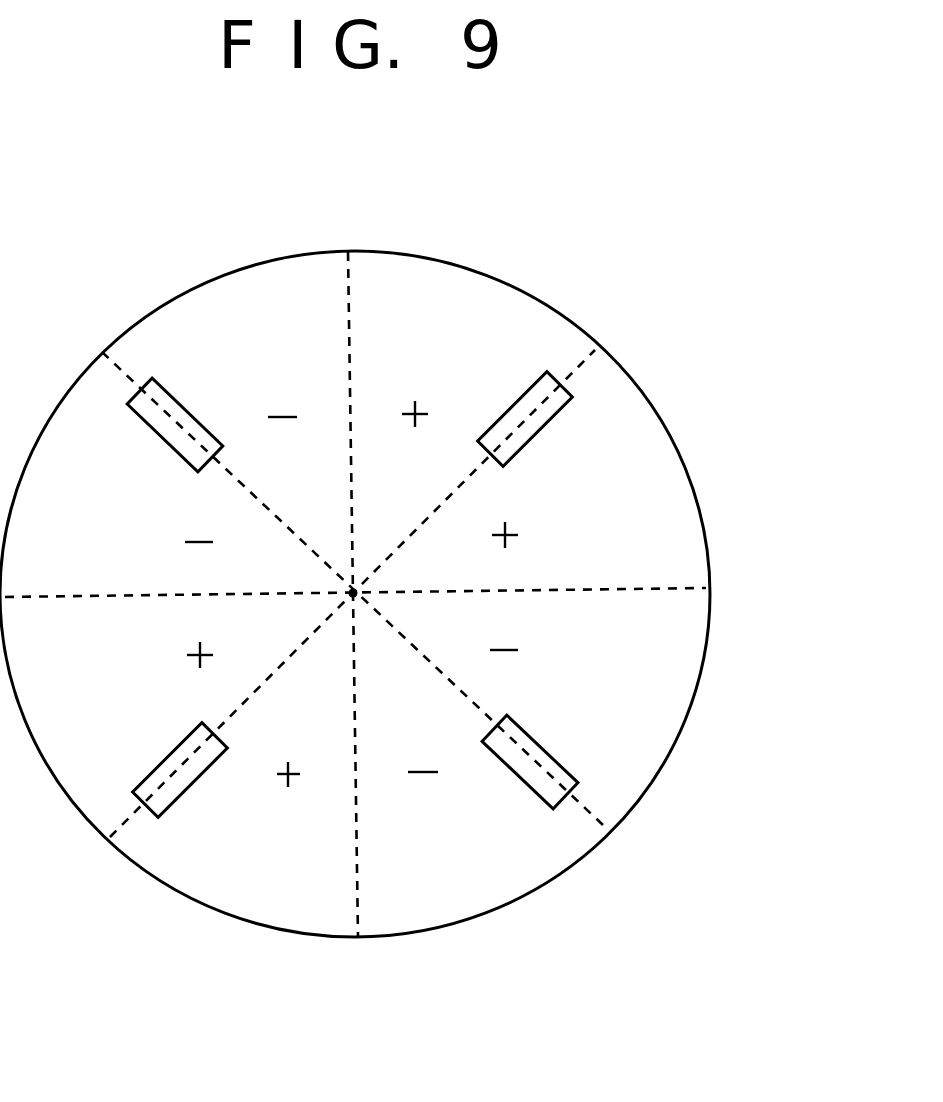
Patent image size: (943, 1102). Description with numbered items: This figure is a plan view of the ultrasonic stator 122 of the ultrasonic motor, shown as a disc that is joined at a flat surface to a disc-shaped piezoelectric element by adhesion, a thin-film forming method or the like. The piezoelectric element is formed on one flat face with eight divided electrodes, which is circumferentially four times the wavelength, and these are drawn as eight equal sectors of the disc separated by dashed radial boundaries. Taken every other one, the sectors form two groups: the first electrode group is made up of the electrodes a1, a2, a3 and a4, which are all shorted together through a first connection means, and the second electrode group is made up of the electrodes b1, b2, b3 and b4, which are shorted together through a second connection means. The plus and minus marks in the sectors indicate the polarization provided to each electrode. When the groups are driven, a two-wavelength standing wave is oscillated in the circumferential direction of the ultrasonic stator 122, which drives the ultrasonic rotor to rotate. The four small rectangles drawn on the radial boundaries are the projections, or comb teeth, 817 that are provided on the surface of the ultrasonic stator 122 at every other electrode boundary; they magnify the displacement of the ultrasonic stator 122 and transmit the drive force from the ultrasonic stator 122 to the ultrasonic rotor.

The ultrasonic stator 122 is at (645, 790).
The projections (comb teeth) 817 is at (543, 392).
The electrode a1 is at (428, 376).
The electrode a2 is at (563, 682).
The electrode a3 is at (276, 817).
The electrode a4 is at (144, 513).
The electrode b1 is at (560, 513).
The electrode b2 is at (436, 820).
The electrode b3 is at (145, 679).
The electrode b4 is at (270, 370).